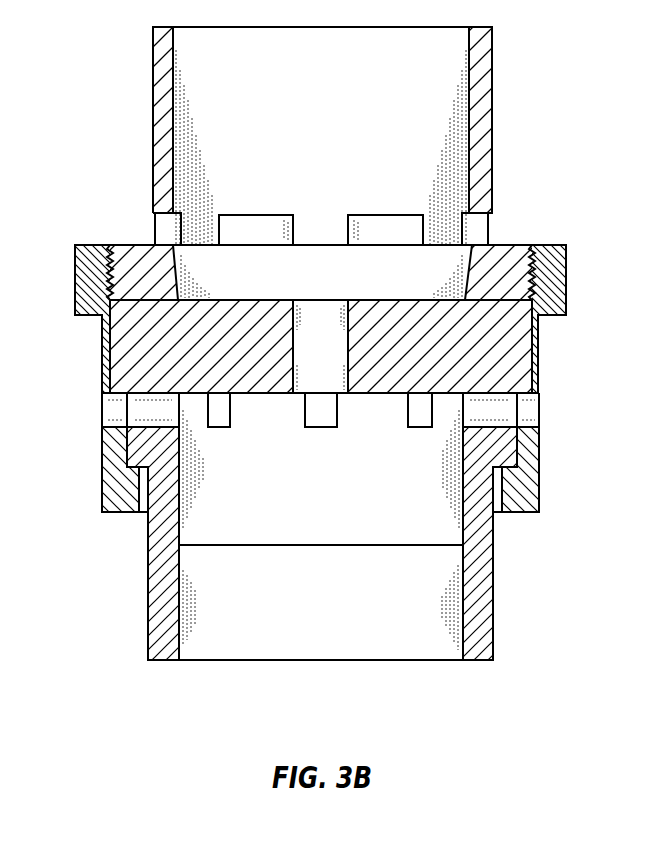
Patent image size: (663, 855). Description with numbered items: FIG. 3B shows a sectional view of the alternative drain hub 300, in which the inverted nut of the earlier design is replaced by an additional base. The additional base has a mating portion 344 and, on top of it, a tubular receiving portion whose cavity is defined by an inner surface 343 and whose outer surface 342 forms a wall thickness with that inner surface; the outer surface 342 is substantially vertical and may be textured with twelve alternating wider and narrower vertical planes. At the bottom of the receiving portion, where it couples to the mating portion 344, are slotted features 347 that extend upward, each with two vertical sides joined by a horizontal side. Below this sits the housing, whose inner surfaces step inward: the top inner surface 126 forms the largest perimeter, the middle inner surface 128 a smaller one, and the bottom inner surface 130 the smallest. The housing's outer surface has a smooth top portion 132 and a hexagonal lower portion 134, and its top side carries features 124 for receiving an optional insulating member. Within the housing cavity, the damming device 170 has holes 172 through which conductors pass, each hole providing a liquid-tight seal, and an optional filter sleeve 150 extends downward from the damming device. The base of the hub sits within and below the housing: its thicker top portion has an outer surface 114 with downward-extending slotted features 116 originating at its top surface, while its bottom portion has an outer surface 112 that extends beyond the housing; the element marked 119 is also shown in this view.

The drain hub 300 is at (91, 718).
The outer surface of the receiving portion 342 is at (484, 131).
The inner surface of the receiving portion 343 is at (342, 133).
The slotted features 347 is at (383, 213).
The features for receiving an insulating member 124 is at (549, 245).
The top inner surface 126 is at (533, 282).
The mating portion 344 is at (522, 285).
The top portion of the outer surface of the housing 132 is at (566, 300).
The damming device 170 is at (460, 358).
The hole 172 is at (342, 358).
The middle inner surface 128 is at (518, 437).
The slotted features 116 is at (418, 410).
The filter sleeve 150 is at (342, 480).
The outer surface of the top portion of the base 114 is at (127, 453).
The lower portion of the outer surface of the housing 134 is at (523, 483).
The bottom inner surface 130 is at (496, 512).
The outer surface of the bottom portion of the base 112 is at (156, 580).
The lower cavity 119 is at (342, 615).